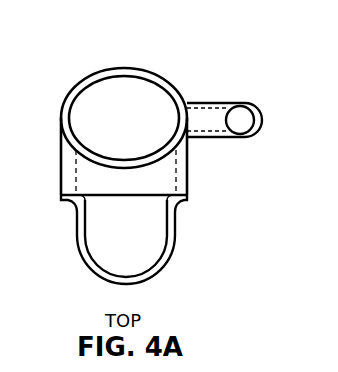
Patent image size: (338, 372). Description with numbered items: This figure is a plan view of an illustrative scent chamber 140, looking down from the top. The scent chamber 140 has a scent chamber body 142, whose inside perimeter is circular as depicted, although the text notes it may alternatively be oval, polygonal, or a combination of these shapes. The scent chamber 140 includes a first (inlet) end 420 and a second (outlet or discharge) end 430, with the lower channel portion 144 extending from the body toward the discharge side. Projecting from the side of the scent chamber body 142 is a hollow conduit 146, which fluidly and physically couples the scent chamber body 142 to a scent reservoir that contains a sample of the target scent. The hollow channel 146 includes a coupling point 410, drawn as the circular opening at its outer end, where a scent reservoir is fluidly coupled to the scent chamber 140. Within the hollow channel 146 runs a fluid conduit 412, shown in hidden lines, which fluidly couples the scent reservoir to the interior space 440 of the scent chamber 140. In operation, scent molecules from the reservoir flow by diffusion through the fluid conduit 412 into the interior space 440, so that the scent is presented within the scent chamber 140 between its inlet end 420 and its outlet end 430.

The scent chamber 140 is at (212, 35).
The scent chamber body 142 is at (165, 74).
The lower channel 144 is at (166, 265).
The hollow conduit 146 is at (248, 104).
The coupling point 410 is at (258, 121).
The fluid conduit 412 is at (196, 122).
The first (inlet) end 420 is at (61, 128).
The second (outlet or discharge) end 430 is at (62, 200).
The interior space 440 is at (128, 88).